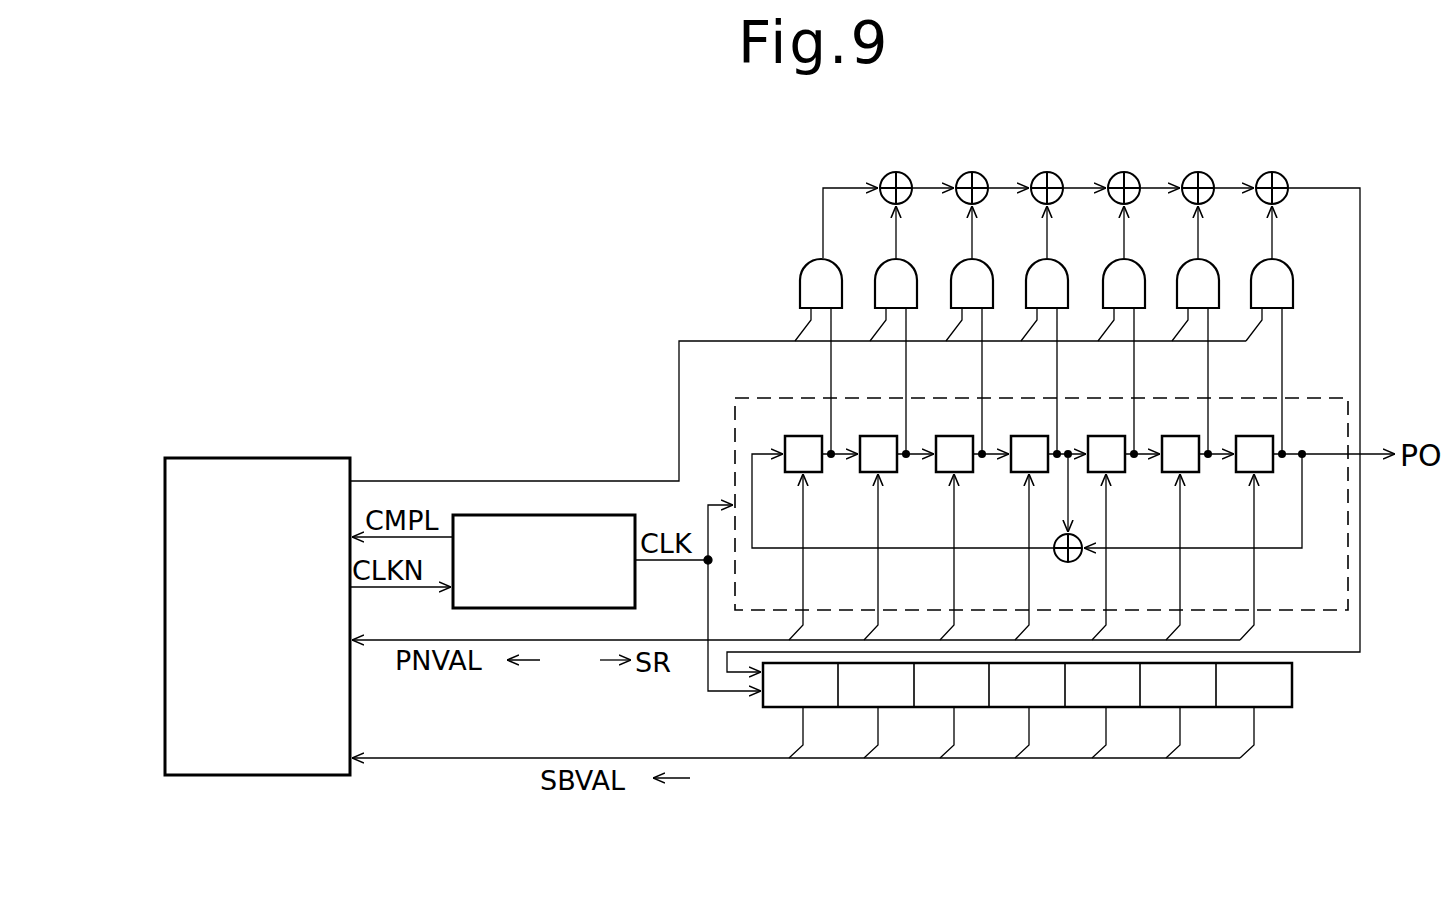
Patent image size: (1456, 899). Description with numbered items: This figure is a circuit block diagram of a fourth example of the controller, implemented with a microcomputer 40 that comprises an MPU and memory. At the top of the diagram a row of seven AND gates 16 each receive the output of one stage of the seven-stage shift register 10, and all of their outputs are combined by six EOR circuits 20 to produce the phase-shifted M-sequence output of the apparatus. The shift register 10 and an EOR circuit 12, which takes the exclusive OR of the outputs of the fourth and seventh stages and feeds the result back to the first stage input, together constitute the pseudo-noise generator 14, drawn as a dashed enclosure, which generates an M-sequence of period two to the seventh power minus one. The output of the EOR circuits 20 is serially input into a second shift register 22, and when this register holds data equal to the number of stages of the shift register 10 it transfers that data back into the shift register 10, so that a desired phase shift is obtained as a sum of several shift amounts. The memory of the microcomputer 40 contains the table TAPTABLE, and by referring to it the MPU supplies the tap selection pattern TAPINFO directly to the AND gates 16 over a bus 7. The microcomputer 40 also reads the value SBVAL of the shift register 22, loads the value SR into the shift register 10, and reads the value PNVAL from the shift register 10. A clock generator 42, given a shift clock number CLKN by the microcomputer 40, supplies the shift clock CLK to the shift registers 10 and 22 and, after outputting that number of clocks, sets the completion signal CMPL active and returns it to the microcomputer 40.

The tap information bus 7 is at (707, 352).
The shift register 10 is at (1293, 443).
The EOR circuit 12 is at (1056, 562).
The pseudo-noise generator 14 is at (1323, 611).
The AND gates 16 is at (1299, 264).
The EOR circuits 20 is at (1295, 177).
The shift register 22 is at (1292, 698).
The microcomputer 40 is at (326, 458).
The clock generator 42 is at (635, 582).